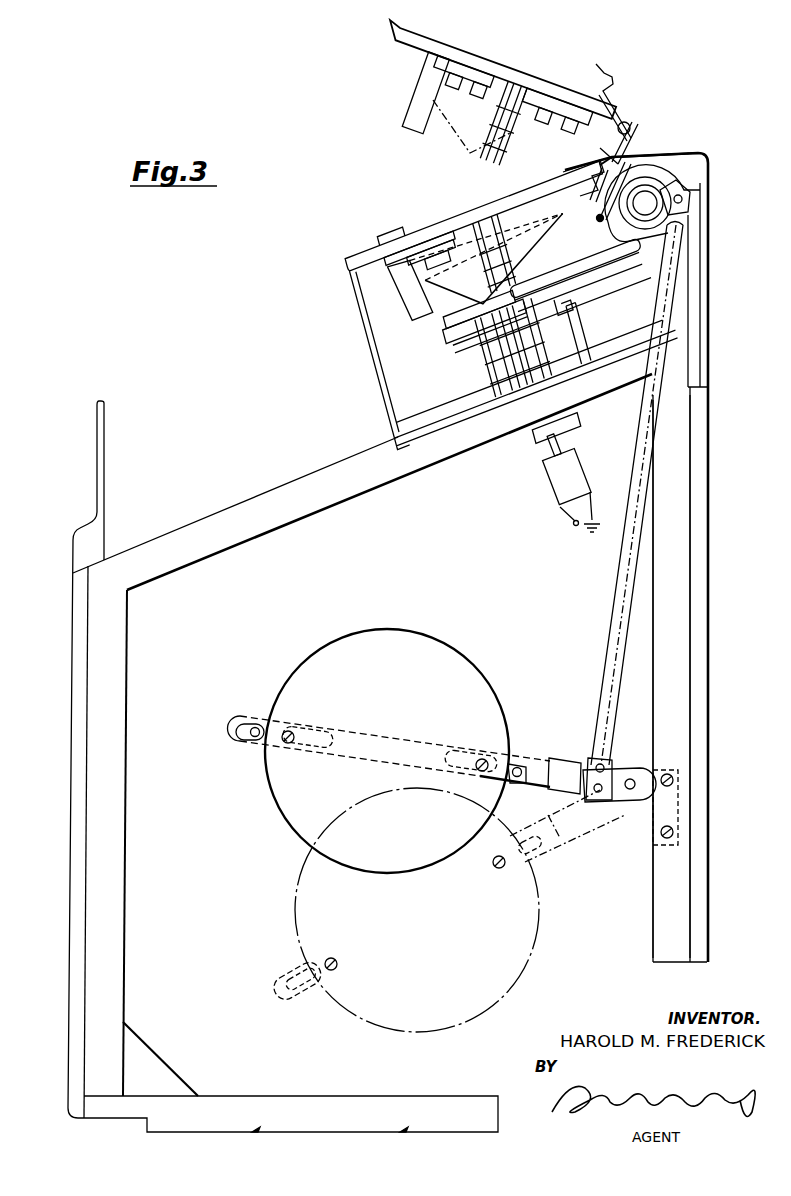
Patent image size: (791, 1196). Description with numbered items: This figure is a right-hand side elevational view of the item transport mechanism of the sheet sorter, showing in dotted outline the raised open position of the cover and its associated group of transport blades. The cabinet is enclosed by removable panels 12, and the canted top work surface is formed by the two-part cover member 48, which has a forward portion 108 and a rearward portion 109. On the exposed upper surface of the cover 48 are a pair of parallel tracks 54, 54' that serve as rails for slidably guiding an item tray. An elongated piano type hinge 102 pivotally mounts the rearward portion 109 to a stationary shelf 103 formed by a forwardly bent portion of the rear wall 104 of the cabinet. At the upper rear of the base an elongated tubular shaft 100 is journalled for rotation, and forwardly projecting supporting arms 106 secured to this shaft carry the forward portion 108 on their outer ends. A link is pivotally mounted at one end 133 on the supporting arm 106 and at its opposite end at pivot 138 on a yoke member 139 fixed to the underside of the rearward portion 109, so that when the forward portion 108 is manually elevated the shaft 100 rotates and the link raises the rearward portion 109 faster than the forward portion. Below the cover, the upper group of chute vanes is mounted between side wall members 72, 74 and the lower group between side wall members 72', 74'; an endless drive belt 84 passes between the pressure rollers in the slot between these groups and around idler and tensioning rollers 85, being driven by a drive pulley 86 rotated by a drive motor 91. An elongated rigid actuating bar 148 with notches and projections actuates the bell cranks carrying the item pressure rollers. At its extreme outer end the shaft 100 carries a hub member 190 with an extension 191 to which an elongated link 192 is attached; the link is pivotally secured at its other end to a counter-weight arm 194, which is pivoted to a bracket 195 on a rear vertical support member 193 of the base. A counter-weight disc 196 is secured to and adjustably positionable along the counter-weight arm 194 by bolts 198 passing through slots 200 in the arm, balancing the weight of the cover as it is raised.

The removable panel 12 is at (70, 656).
The cover member 48 is at (530, 72).
The track 54 is at (389, 221).
The track 54' is at (537, 178).
The side wall member 72 is at (502, 254).
The side wall member 72' is at (518, 350).
The side wall member 74 is at (494, 264).
The side wall member 74' is at (505, 360).
The endless drive belt 84 is at (478, 312).
The idler and tensioning roller 85 is at (536, 282).
The drive pulley 86 is at (604, 323).
The drive motor 91 is at (550, 480).
The tubular shaft 100 is at (708, 164).
The piano type hinge 102 is at (660, 154).
The stationary shelf 103 is at (700, 152).
The rear wall 104 is at (710, 272).
The supporting arm 106 is at (440, 118).
The forward portion of cover 108 is at (410, 240).
The rearward portion of cover 109 is at (597, 190).
The pivot end of link 133 is at (598, 220).
The pivot 138 is at (640, 166).
The yoke member 139 is at (630, 160).
The actuating bar 148 is at (581, 360).
The hub member 190 is at (700, 190).
The extension 191 is at (695, 203).
The elongated link 192 is at (607, 630).
The rear vertical support member 193 is at (690, 625).
The counter-weight arm 194 is at (565, 756).
The bracket 195 is at (640, 800).
The counter-weight disc 196 is at (398, 630).
The bolt 198 is at (288, 730).
The slot 200 is at (256, 742).